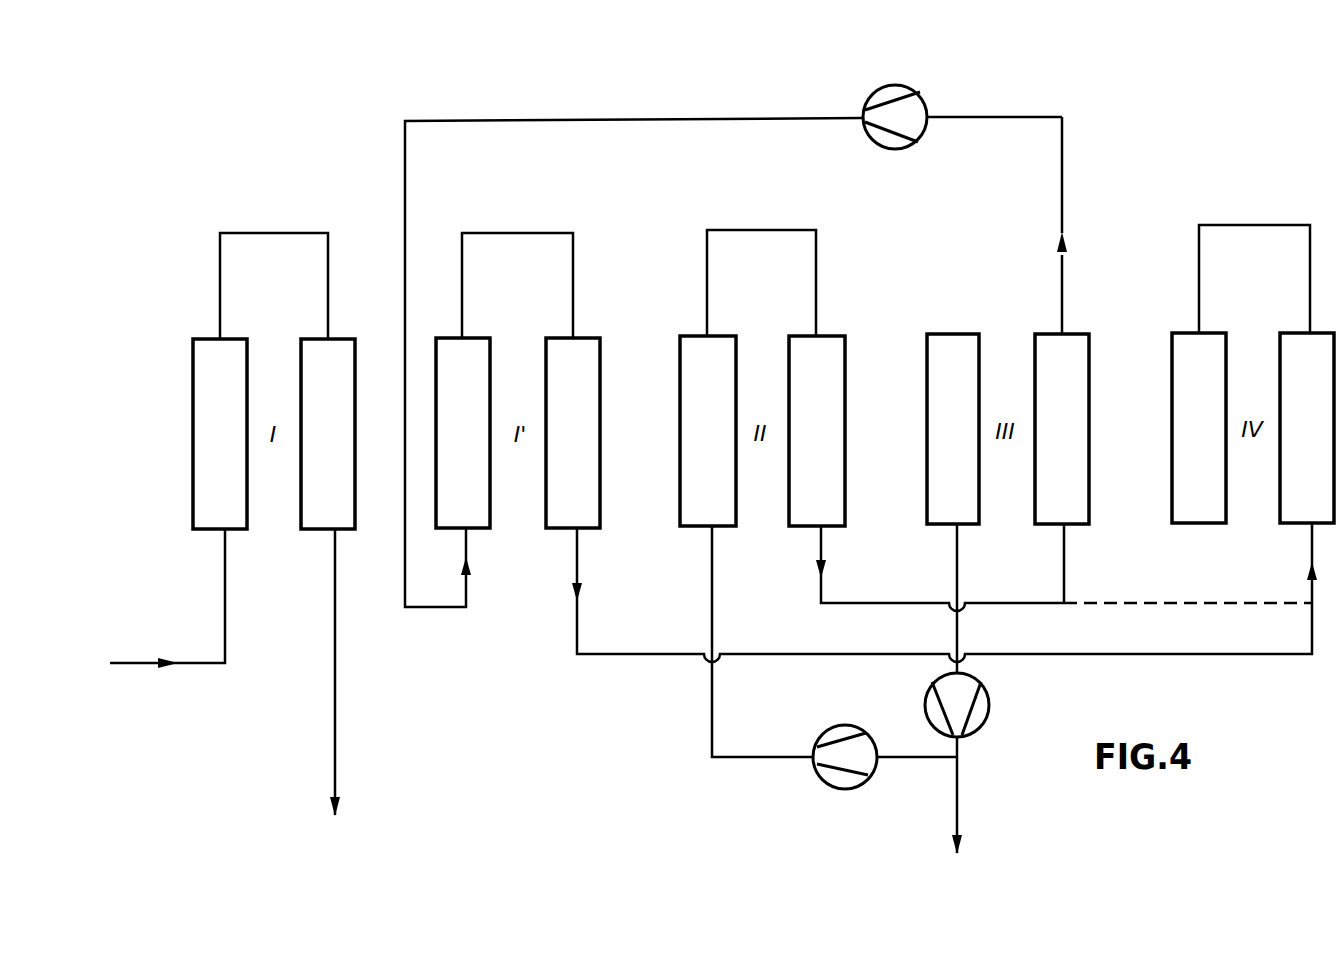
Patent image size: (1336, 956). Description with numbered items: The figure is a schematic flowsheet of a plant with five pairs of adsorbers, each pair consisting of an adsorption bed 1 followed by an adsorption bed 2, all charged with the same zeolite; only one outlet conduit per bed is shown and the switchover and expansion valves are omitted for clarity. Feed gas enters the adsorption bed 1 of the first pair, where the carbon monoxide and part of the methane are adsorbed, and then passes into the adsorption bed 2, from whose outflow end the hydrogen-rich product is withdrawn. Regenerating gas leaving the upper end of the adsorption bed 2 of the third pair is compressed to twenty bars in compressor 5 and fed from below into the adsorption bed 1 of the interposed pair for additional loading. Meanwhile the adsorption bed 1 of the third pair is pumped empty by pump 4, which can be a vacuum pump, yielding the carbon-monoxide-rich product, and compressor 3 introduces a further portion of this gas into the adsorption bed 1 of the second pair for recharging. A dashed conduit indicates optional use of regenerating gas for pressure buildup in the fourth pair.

The adsorption bed 1 is at (709, 431).
The adsorption bed 2 is at (817, 431).
The compressor 3 is at (850, 727).
The pump 4 is at (990, 705).
The compressor 5 is at (918, 95).